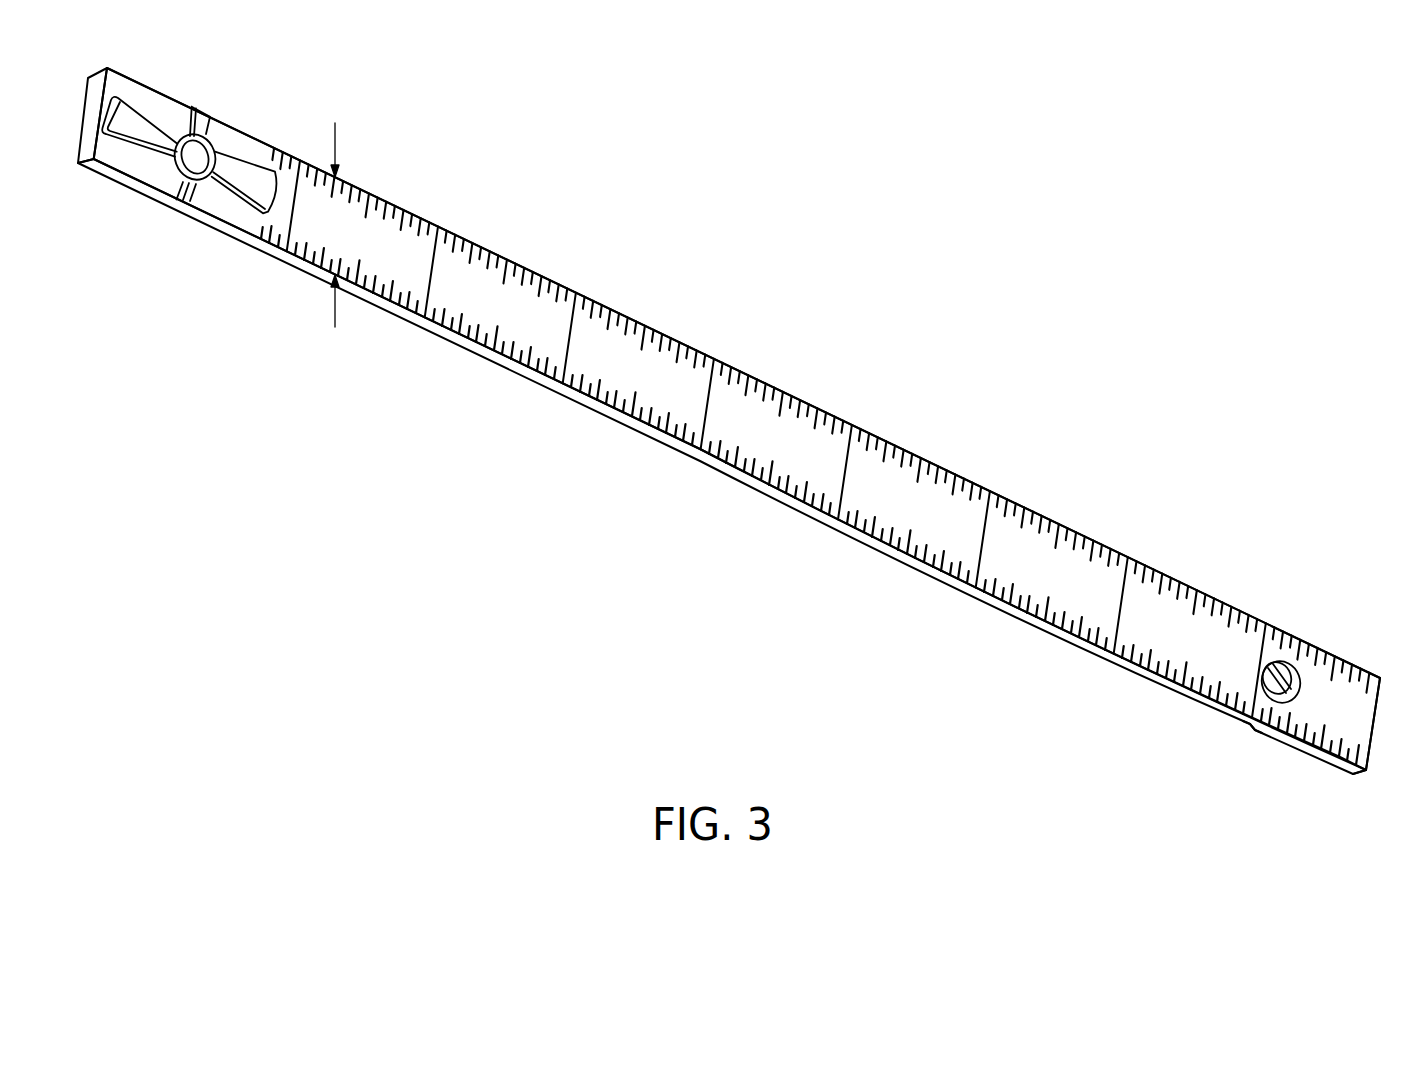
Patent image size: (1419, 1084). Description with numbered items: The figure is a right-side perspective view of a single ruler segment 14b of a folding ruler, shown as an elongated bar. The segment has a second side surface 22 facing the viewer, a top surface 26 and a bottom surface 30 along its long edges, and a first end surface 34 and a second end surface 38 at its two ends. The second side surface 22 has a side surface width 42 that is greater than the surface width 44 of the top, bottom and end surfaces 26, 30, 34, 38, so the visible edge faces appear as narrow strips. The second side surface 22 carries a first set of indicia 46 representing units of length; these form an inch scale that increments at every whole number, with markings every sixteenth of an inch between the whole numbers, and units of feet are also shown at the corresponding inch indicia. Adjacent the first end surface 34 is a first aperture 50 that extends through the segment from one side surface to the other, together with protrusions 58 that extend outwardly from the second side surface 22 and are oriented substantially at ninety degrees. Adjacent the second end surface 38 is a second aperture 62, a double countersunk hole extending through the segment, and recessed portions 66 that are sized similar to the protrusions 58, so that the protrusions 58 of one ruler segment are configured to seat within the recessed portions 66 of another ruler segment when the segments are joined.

The ruler segment 14b is at (998, 385).
The second side surface 22 is at (617, 370).
The top surface 26 is at (909, 560).
The bottom surface 30 is at (790, 394).
The first end surface 34 is at (93, 108).
The second end surface 38 is at (1373, 727).
The side surface width 42 is at (337, 143).
The surface width 44 is at (479, 358).
The first set of indicia 46 is at (484, 437).
The first aperture 50 is at (176, 166).
The protrusions 58 is at (136, 117).
The second aperture 62 is at (1289, 652).
The recessed portions 66 is at (1265, 728).